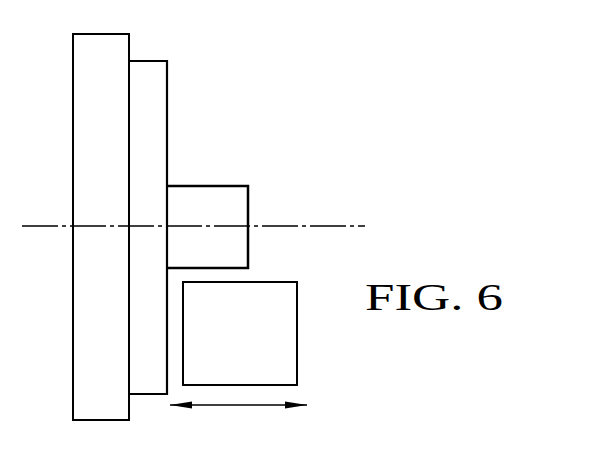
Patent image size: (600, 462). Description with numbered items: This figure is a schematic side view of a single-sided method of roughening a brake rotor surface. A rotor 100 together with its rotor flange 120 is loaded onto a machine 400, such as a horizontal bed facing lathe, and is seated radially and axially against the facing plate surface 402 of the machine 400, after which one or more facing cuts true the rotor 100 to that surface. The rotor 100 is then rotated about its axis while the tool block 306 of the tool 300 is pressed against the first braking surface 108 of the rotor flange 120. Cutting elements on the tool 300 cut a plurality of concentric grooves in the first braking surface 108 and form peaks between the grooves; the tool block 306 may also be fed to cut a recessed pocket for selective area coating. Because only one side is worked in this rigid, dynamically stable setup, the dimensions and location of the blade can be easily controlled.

The facing plate surface 402 is at (131, 47).
The machine 400 is at (101, 227).
The rotor flange 120 is at (168, 123).
The brake rotor 100 is at (248, 207).
The first braking surface 108 is at (167, 363).
The tool block 306 is at (297, 333).
The tool 300 is at (240, 333).